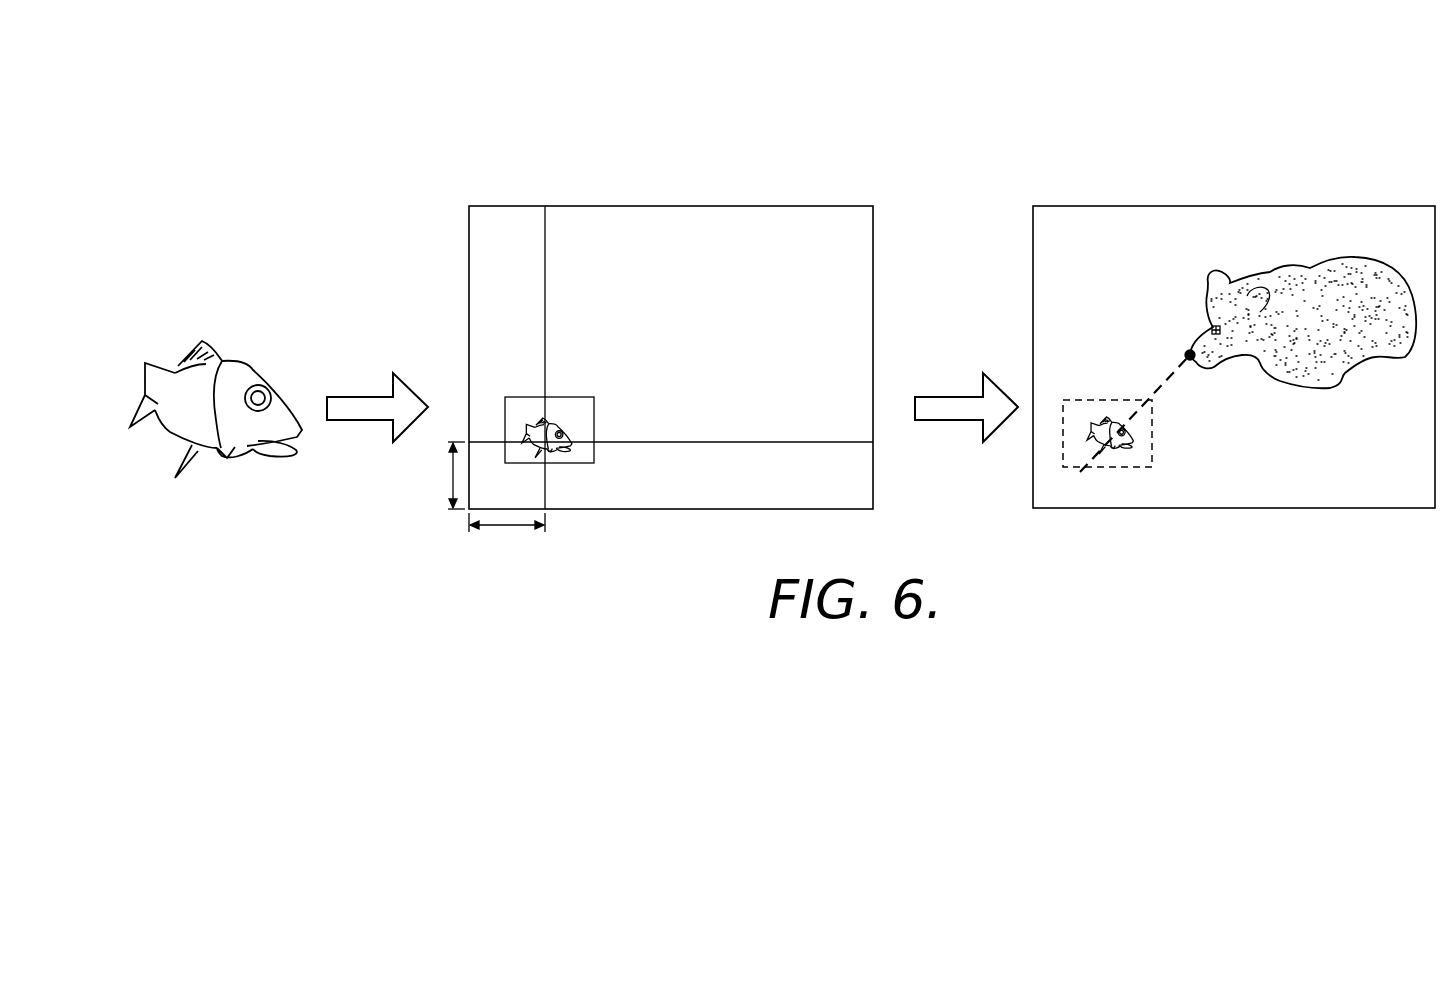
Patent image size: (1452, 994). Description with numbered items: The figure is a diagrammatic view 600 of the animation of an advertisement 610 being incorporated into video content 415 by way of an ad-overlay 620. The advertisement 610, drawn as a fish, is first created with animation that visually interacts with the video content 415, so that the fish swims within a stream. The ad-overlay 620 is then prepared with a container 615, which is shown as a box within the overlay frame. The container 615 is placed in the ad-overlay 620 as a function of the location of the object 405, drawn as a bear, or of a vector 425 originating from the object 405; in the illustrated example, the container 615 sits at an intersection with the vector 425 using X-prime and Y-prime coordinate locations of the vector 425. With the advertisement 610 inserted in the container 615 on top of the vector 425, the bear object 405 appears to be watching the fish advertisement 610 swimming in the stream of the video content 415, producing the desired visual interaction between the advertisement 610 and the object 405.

The diagrammatic view 600 is at (378, 154).
The advertisement 610 is at (246, 368).
The container 615 is at (583, 463).
The ad-overlay 620 is at (695, 510).
The object 405 is at (1287, 270).
The video content 415 is at (1247, 510).
The vector 425 is at (1168, 382).